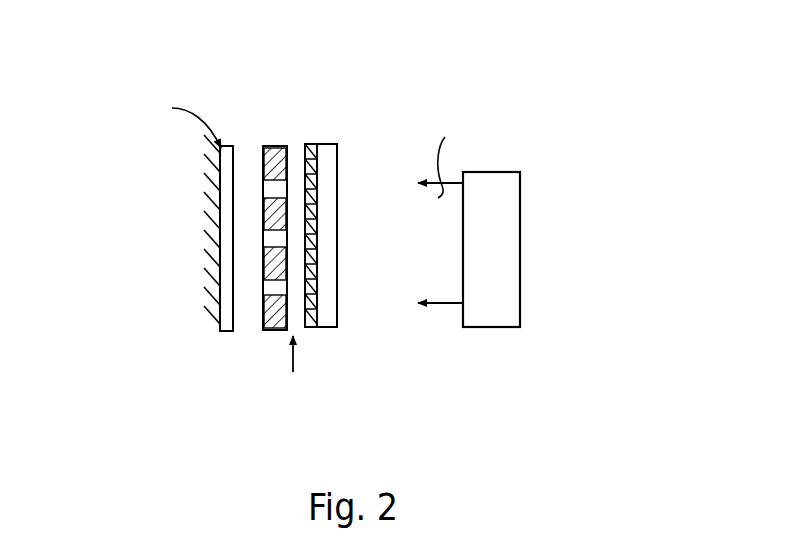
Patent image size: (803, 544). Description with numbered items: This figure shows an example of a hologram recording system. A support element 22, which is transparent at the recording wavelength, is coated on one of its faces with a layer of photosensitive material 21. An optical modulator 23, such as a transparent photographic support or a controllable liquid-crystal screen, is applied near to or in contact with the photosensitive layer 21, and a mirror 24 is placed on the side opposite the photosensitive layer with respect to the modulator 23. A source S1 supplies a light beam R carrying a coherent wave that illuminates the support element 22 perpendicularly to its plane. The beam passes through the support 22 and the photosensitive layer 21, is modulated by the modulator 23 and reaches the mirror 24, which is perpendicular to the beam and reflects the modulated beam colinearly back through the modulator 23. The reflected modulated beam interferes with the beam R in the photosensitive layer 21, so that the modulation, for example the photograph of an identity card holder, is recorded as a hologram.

The layer of photosensitive material 21 is at (311, 144).
The support element 22 is at (333, 144).
The optical modulator 23 is at (277, 145).
The mirror 24 is at (220, 255).
The source S1 is at (503, 268).